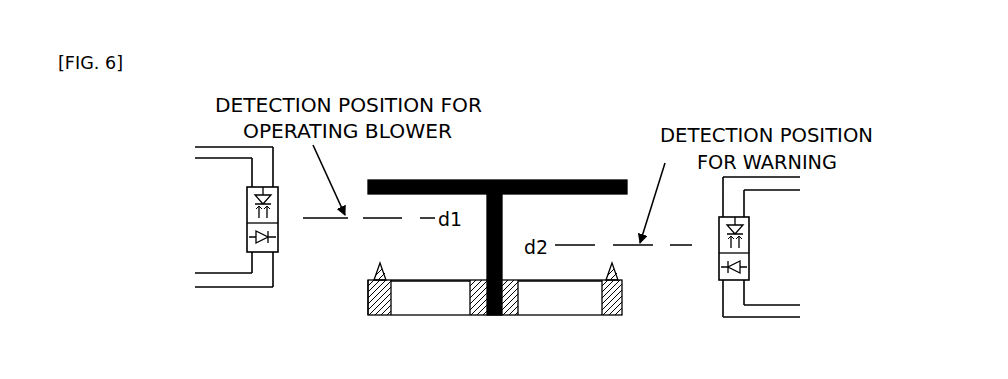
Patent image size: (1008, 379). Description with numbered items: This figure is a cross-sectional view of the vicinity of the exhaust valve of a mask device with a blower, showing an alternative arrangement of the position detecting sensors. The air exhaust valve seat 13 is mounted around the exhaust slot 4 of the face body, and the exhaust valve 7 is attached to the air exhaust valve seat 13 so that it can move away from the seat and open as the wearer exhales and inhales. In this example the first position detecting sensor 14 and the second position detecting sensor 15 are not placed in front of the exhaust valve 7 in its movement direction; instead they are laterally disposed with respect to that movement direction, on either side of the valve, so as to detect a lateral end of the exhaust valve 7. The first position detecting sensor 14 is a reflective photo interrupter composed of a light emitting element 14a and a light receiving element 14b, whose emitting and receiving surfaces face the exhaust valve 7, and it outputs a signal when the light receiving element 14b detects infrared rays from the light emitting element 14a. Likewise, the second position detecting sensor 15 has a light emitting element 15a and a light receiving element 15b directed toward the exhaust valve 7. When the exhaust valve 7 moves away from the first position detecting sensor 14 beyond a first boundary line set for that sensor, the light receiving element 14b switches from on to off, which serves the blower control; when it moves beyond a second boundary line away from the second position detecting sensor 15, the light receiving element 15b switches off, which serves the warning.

The exhaust slot 4 is at (441, 305).
The exhaust valve 7 is at (606, 179).
The air exhaust valve seat 13 is at (624, 300).
The first position detecting sensor 14 is at (214, 217).
The light emitting element 14a is at (247, 237).
The light receiving element 14b is at (247, 200).
The second position detecting sensor 15 is at (783, 247).
The light emitting element 15a is at (749, 268).
The light receiving element 15b is at (749, 228).